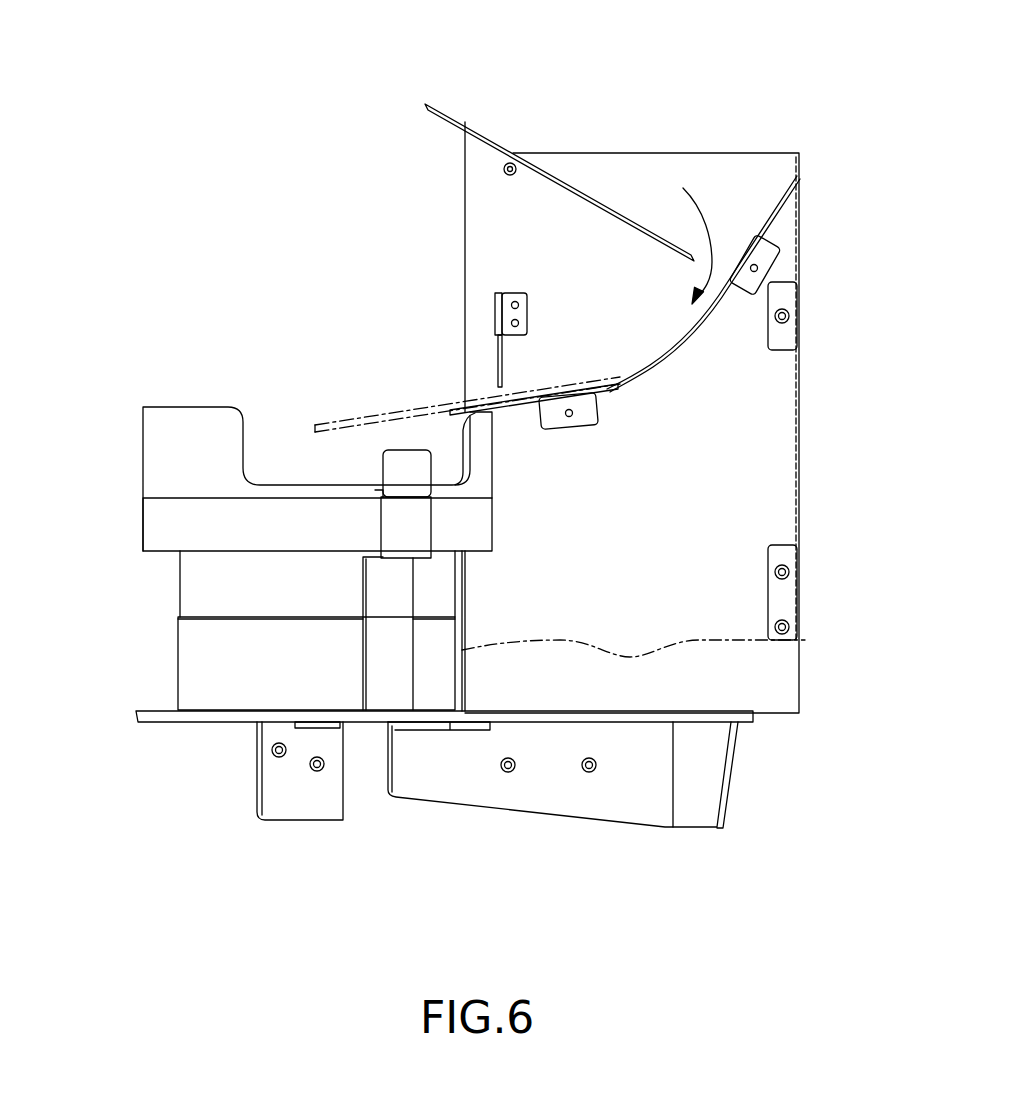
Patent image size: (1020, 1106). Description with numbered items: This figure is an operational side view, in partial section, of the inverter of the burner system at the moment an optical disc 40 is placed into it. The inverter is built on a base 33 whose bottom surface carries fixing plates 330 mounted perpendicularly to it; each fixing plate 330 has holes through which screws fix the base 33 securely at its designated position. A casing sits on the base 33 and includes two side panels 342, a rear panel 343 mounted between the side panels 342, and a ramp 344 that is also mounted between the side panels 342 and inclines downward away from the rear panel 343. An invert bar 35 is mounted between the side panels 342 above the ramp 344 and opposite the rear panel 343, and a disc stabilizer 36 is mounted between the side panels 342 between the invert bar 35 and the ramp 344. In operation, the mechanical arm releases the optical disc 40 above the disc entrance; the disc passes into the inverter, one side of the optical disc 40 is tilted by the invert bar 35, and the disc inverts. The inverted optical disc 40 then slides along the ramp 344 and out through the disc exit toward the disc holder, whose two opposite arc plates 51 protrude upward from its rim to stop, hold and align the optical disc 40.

The optical disc 40 is at (465, 122).
The invert bar 35 is at (503, 168).
The disc stabilizer 36 is at (495, 320).
The side panel 342 is at (641, 171).
The ramp 344 is at (767, 217).
The rear panel 343 is at (803, 410).
The arc plate 51 is at (190, 450).
The base 33 is at (210, 722).
The fixing plate 330 is at (297, 797).